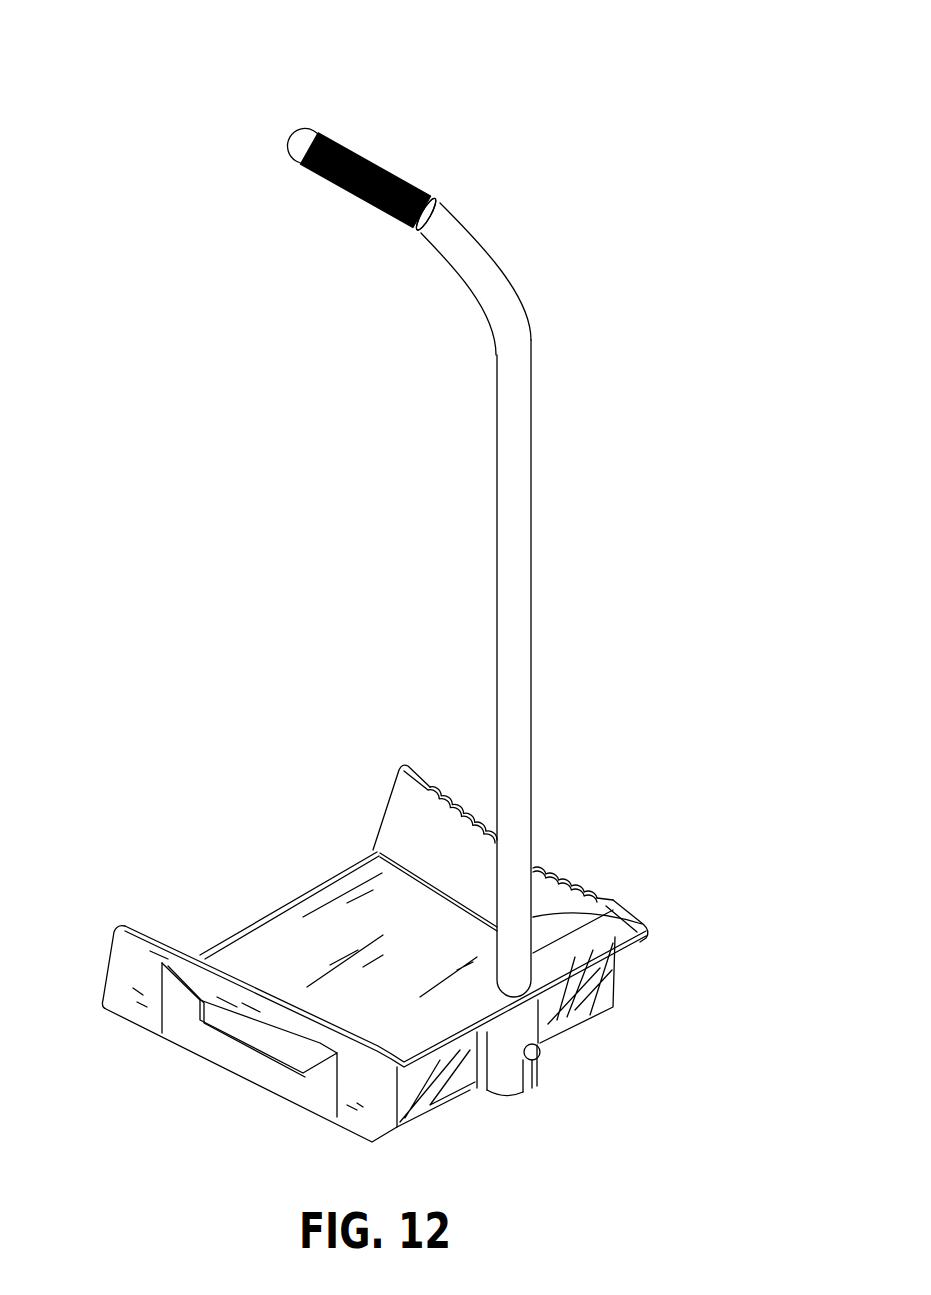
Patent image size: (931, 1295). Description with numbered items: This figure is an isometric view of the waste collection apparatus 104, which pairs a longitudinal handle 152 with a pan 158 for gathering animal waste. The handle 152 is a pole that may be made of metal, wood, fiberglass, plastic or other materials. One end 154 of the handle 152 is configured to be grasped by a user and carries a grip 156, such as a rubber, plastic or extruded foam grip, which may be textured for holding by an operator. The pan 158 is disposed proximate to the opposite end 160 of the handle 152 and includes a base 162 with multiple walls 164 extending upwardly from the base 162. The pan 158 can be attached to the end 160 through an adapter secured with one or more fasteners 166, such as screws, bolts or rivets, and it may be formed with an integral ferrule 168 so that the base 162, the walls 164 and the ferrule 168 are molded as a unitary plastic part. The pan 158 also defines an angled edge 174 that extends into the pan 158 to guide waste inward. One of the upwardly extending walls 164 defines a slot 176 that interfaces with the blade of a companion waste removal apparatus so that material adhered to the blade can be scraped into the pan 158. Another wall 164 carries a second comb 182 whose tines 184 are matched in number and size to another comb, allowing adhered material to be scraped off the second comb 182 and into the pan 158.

The waste collection apparatus 104 is at (518, 215).
The longitudinal handle 152 is at (532, 450).
The end of the handle 154 is at (527, 318).
The grip 156 is at (393, 163).
The pan 158 is at (647, 923).
The opposite end of the handle 160 is at (640, 940).
The base 162 is at (365, 917).
The walls 164 is at (423, 812).
The fasteners 166 is at (543, 1055).
The ferrule 168 is at (507, 1082).
The edge 174 is at (243, 930).
The slot 176 is at (270, 1042).
The second comb 182 is at (543, 867).
The tines 184 is at (593, 880).